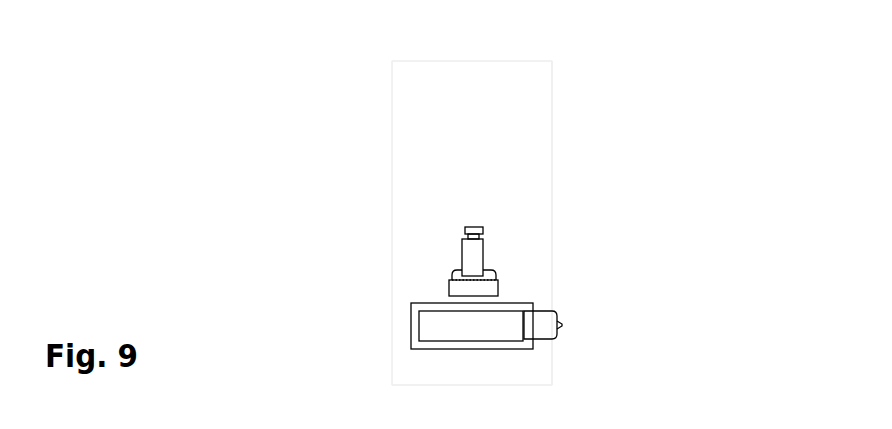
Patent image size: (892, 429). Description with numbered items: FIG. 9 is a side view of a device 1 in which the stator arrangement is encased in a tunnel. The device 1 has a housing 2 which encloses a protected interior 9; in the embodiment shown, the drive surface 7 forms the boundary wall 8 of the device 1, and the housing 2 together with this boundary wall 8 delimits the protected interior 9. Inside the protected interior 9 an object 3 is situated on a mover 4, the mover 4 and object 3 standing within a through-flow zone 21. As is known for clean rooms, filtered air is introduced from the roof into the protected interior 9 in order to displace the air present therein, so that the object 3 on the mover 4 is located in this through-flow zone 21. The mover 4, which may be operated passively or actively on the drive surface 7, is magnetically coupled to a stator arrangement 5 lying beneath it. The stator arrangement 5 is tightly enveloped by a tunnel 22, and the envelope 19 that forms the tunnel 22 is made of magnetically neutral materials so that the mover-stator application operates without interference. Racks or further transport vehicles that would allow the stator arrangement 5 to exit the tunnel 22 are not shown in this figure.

The device 1 is at (591, 122).
The housing 2 is at (392, 142).
The drive surface 7 is at (472, 223).
The boundary wall 8 is at (472, 223).
The object 3 is at (472, 253).
The mover 4 is at (467, 289).
The stator arrangement 5 is at (432, 320).
The protected interior 9 is at (540, 193).
The envelope 19 is at (523, 303).
The through-flow zone 21 is at (470, 201).
The tunnel 22 is at (562, 325).